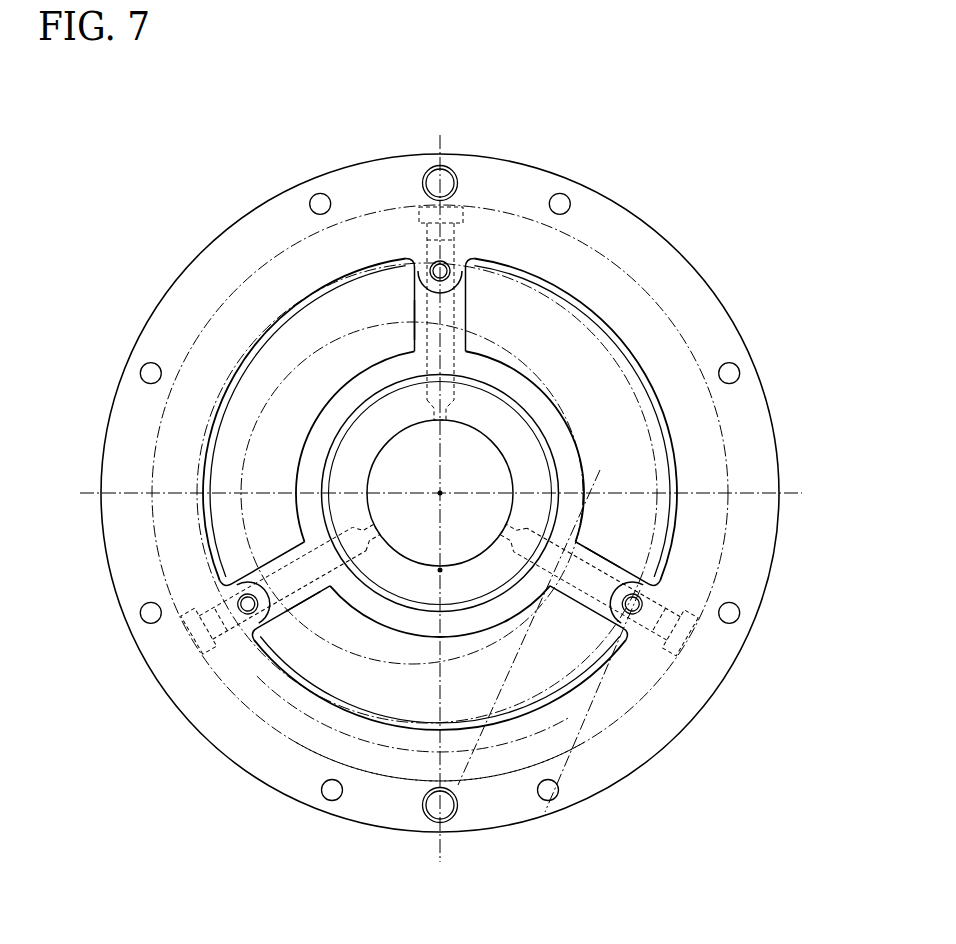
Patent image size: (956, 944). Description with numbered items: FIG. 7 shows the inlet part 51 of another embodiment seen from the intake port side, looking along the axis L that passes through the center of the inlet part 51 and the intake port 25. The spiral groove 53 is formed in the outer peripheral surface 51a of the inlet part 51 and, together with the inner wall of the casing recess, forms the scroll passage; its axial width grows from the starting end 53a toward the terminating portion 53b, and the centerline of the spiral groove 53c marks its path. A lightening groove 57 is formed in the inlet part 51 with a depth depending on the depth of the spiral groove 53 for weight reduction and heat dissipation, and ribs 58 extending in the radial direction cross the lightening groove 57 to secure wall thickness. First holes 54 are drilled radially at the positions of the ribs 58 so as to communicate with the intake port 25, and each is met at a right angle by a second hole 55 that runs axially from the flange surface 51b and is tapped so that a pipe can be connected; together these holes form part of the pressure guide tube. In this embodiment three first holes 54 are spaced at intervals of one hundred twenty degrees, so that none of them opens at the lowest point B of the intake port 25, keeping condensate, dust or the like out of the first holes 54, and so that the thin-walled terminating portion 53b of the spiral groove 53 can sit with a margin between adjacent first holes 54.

The intake port 25 is at (380, 452).
The inlet part 51 is at (197, 258).
The outer peripheral surface 51a is at (723, 423).
The flange surface 51b is at (607, 233).
The spiral groove 53 is at (552, 608).
The starting end 53a is at (483, 766).
The terminating portion 53b is at (578, 762).
The centerline of the spiral groove 53c is at (665, 542).
The first hole 54 is at (468, 306).
The second hole 55 is at (452, 264).
The lightening groove 57 is at (585, 362).
The rib 58 is at (414, 305).
The axis L is at (441, 493).
The lowest point B is at (441, 572).